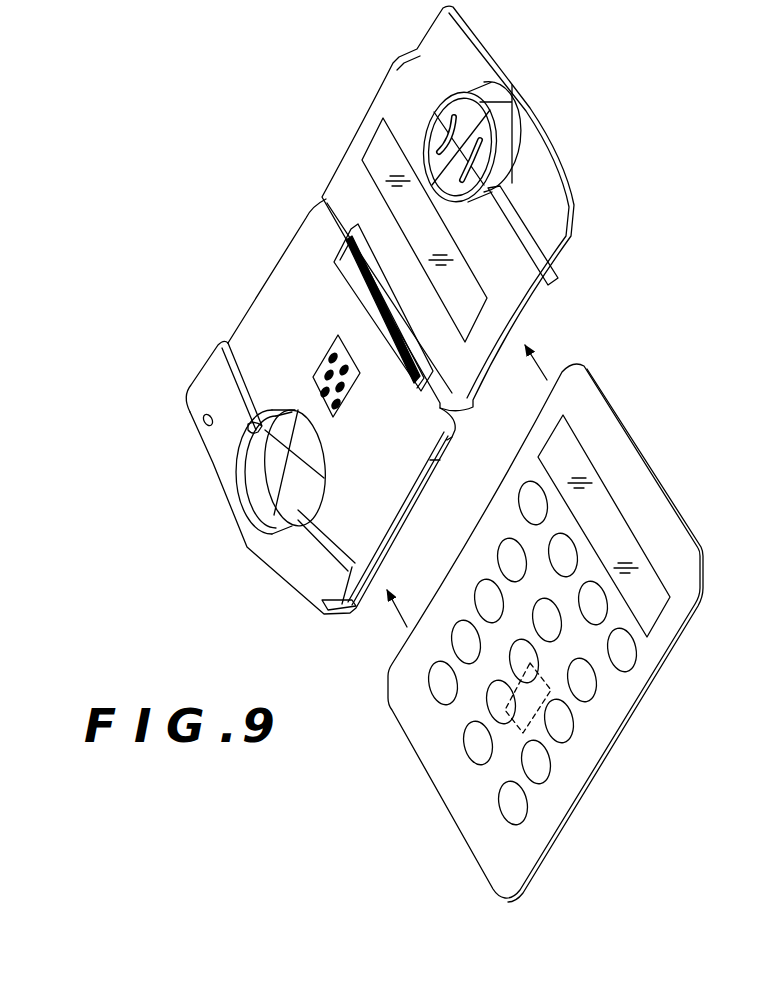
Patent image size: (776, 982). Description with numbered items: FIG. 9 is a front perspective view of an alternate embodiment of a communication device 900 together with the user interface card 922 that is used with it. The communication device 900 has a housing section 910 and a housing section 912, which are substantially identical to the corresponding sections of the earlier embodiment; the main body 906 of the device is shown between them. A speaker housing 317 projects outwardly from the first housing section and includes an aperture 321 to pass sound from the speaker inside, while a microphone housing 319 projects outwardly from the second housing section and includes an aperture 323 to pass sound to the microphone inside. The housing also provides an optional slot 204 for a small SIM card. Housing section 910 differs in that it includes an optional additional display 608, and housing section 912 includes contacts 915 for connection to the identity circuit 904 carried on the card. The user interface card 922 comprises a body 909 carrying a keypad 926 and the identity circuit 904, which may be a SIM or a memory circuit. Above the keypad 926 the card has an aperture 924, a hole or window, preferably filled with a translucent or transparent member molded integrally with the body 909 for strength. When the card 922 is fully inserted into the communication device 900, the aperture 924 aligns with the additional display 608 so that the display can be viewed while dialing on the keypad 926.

The communication device 900 is at (223, 317).
The main housing 906 is at (290, 253).
The housing section 910 is at (393, 72).
The body 909 is at (601, 421).
The housing section 912 is at (196, 386).
The contacts 915 is at (316, 384).
The additional display 608 is at (378, 153).
The speaker housing 317 is at (499, 141).
The aperture 321 is at (453, 116).
The microphone housing 319 is at (293, 566).
The aperture 323 is at (205, 426).
The slot 204 is at (354, 602).
The user interface card 922 is at (627, 506).
The aperture 924 is at (648, 601).
The keypad 926 is at (445, 726).
The identity circuit 904 is at (532, 703).